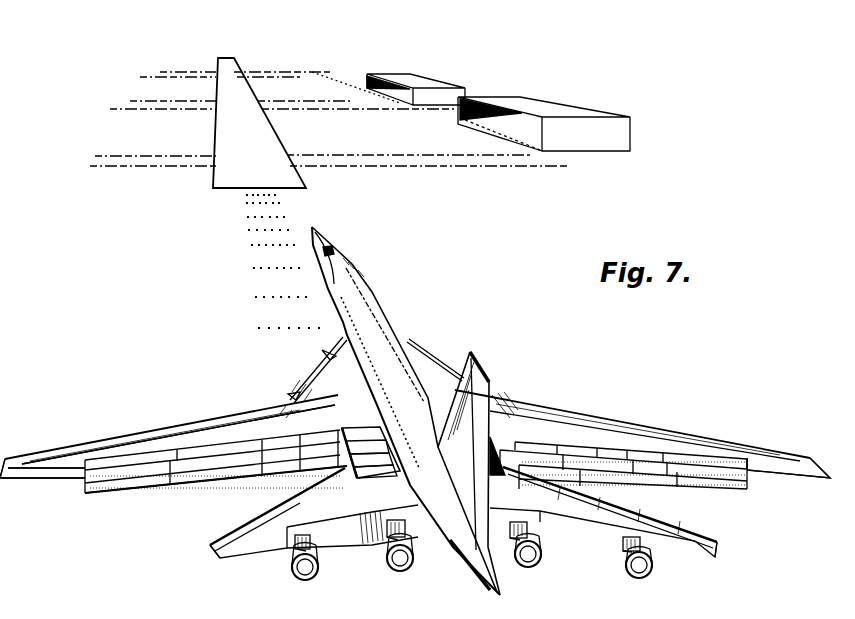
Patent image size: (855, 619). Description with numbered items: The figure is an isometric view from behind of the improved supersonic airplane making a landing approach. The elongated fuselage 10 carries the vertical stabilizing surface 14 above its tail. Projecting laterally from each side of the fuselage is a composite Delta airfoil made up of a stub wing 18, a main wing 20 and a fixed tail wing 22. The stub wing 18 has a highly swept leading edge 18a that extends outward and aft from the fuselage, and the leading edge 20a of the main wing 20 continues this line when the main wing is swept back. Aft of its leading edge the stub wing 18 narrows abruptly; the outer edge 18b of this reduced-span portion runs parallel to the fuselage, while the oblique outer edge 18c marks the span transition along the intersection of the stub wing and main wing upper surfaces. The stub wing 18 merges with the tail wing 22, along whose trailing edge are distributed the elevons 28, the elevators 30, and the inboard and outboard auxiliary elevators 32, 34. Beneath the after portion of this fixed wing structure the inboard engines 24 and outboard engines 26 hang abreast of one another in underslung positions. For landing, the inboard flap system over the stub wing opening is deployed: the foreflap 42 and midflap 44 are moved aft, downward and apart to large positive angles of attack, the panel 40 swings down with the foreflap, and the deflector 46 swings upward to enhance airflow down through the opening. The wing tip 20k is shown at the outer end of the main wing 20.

The fuselage 10 is at (366, 276).
The vertical stabilizing surface 14 is at (480, 360).
The stub wing 18 is at (437, 378).
The leading edge of stub wing 18a is at (326, 352).
The outer edge of reduced span portion 18b is at (379, 447).
The outer edge of stub wing transition 18c is at (291, 396).
The main wing 20 is at (415, 454).
The leading edge of main wing 20a is at (200, 424).
The wing tip 20k is at (45, 473).
The tail wing 22 is at (475, 528).
The inboard engines 24 is at (493, 564).
The outboard engines 26 is at (301, 582).
The elevons 28 is at (215, 549).
The elevators 30 is at (362, 546).
The inboard auxiliary elevators 32 is at (412, 528).
The outboard auxiliary elevators 34 is at (320, 553).
The panel 40 is at (380, 383).
The foreflap 42 is at (383, 452).
The midflap 44 is at (388, 460).
The deflector 46 is at (384, 473).